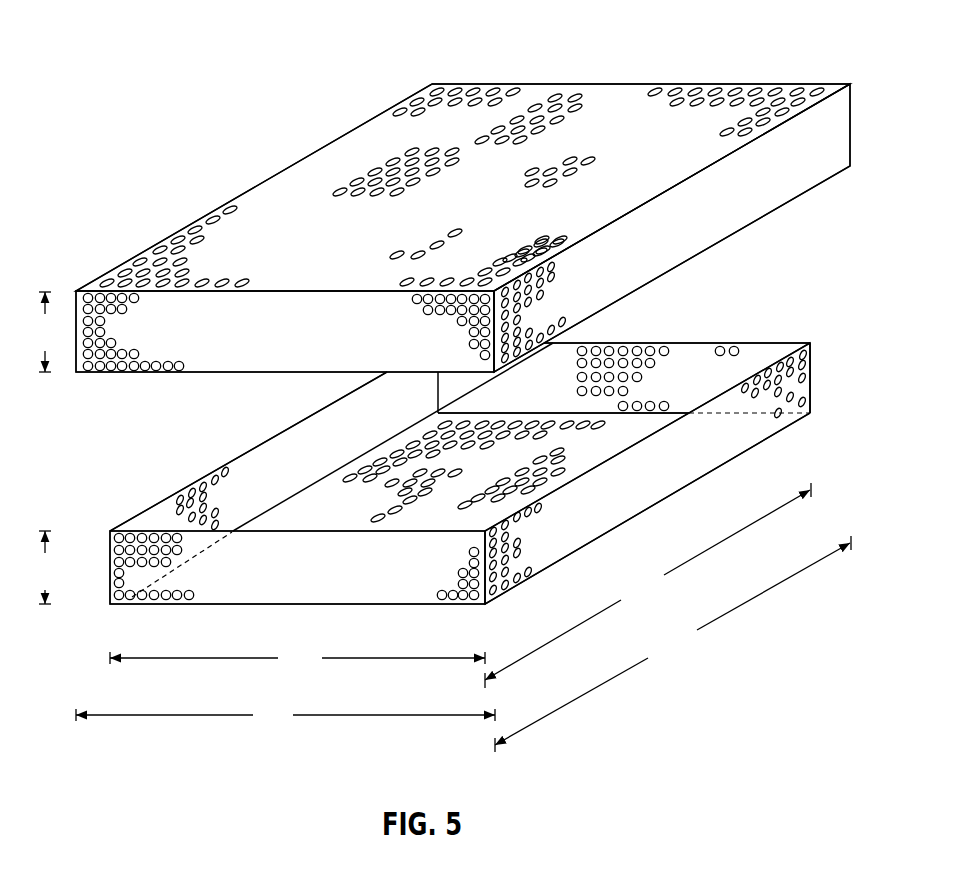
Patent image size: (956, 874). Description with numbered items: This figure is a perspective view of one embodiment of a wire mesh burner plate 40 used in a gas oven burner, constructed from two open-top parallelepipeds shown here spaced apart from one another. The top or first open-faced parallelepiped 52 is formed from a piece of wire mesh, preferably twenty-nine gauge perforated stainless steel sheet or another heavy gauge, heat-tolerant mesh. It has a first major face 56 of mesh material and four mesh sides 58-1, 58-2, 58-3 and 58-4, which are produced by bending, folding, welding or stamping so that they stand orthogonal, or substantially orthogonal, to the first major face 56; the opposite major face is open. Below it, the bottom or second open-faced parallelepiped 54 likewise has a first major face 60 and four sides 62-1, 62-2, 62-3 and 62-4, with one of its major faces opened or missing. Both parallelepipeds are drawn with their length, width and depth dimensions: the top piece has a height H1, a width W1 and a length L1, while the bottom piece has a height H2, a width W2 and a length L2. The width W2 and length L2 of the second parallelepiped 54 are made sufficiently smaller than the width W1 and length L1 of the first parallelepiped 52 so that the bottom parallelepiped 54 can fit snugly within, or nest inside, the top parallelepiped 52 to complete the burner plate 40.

The wire mesh burner plate 40 is at (118, 60).
The first open-faced parallelepiped 52 is at (798, 68).
The second open-faced parallelepiped 54 is at (813, 378).
The first major face 56 is at (324, 254).
The mesh side 58-1 is at (320, 345).
The mesh side 58-2 is at (700, 244).
The mesh side 58-3 is at (650, 82).
The mesh side 58-4 is at (249, 188).
The first major face 60 is at (561, 565).
The side 62-1 is at (322, 582).
The side 62-2 is at (678, 487).
The side 62-3 is at (714, 339).
The side 62-4 is at (290, 425).
The height of upper block H1 is at (49, 332).
The height of lower block H2 is at (49, 567).
The width of upper block W1 is at (285, 720).
The width of lower block W2 is at (297, 663).
The length of upper block L1 is at (673, 644).
The length of lower block L2 is at (648, 585).